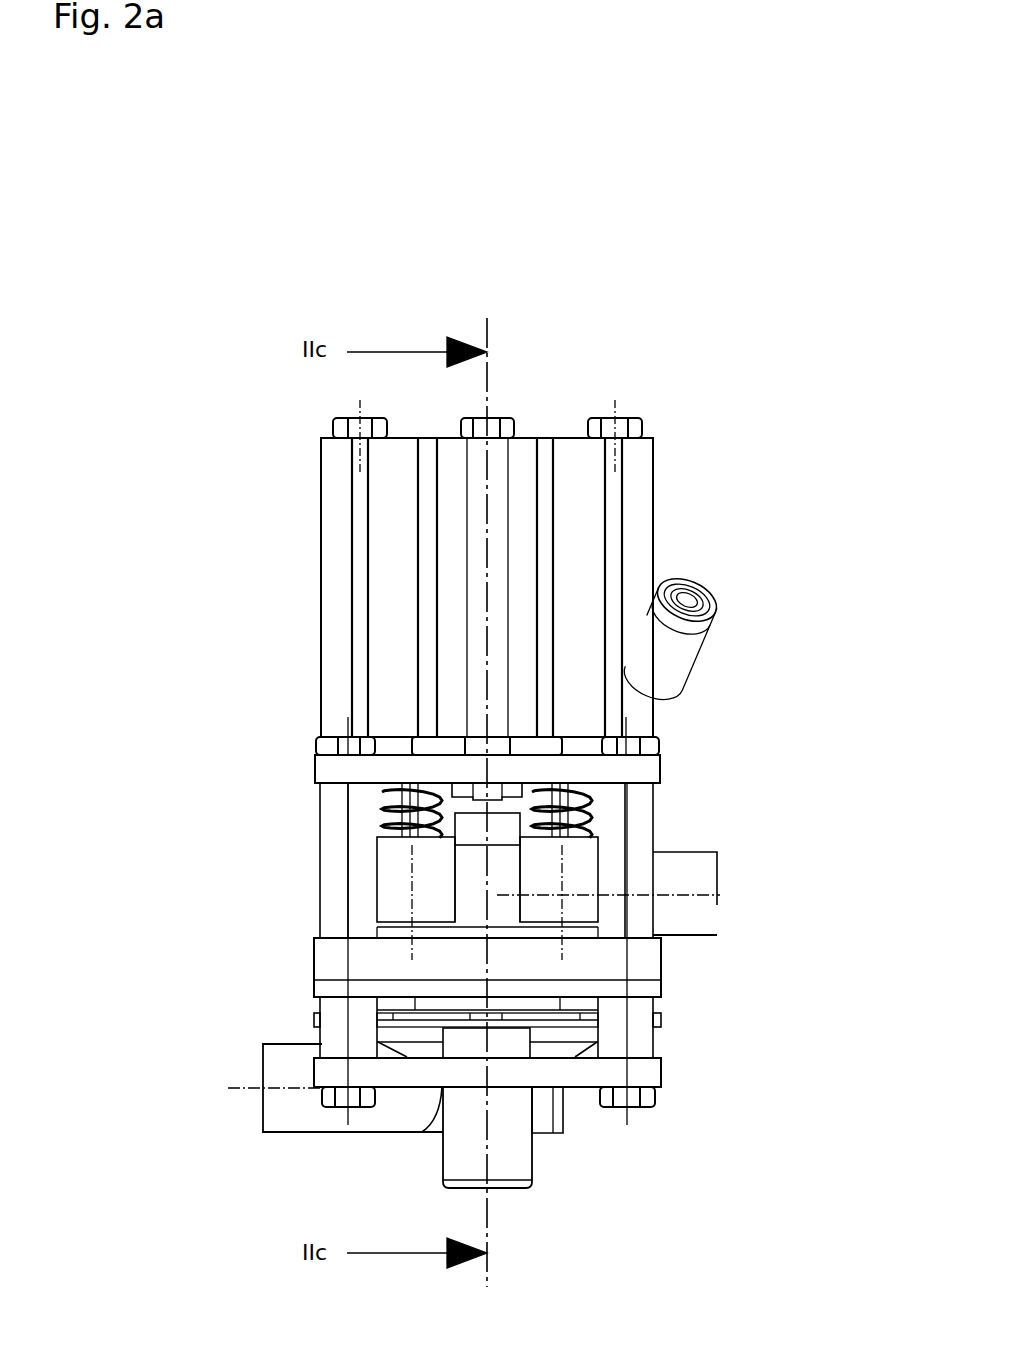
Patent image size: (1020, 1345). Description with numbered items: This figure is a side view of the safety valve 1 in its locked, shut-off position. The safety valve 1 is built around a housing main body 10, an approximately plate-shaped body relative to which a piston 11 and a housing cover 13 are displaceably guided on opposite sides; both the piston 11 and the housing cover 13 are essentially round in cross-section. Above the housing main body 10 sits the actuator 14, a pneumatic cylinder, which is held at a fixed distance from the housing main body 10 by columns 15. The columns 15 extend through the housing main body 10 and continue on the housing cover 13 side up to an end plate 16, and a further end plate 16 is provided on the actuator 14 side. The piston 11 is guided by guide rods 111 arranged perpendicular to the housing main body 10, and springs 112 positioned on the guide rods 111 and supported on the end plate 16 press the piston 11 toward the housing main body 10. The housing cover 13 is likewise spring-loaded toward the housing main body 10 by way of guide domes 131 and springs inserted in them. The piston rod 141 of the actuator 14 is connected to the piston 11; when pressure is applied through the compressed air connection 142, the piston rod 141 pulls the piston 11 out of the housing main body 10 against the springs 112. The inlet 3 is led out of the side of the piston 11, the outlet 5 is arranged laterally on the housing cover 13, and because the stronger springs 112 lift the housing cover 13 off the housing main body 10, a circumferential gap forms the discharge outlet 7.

The safety valve 1 is at (686, 352).
The inlet 3 is at (720, 853).
The outlet 5 is at (263, 1115).
The discharge outlet 7 is at (690, 999).
The housing main body 10 is at (315, 968).
The piston 11 is at (395, 932).
The housing cover 13 is at (661, 1027).
The actuator 14 is at (653, 505).
The columns 15 is at (633, 825).
The end plate 16 is at (340, 767).
The guide rods 111 is at (380, 802).
The springs 112 is at (380, 825).
The guide domes 131 is at (468, 1158).
The piston rod 141 is at (444, 794).
The compressed air connection 142 is at (713, 602).